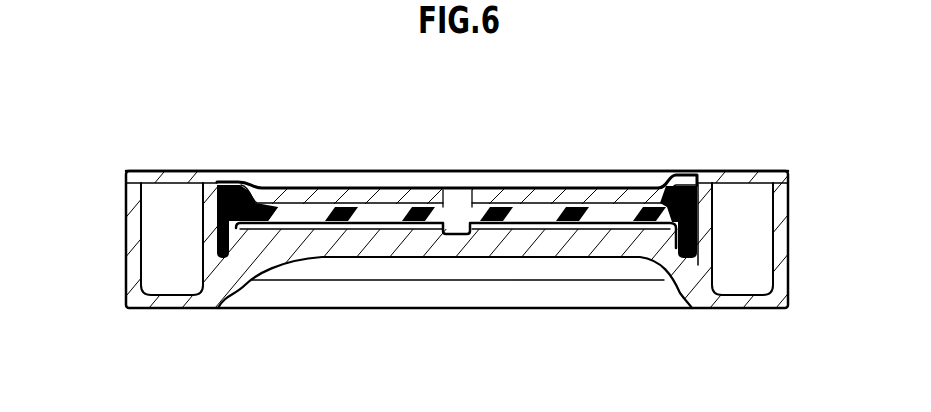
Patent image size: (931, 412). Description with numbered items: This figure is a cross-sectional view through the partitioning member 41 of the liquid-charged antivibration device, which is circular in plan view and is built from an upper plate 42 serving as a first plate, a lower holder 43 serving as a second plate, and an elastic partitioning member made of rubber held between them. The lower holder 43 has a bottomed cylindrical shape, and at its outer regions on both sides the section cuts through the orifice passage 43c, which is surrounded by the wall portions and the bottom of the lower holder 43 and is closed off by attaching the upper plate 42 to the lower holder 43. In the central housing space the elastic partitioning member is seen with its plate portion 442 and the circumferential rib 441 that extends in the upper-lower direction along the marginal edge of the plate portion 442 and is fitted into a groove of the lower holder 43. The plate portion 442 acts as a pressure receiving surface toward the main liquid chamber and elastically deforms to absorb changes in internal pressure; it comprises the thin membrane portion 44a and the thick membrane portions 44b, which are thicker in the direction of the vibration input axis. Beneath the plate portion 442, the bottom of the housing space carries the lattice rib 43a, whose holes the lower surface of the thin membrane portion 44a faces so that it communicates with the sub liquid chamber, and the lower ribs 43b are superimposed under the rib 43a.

The partitioning member 41 is at (160, 120).
The upper plate 42 is at (710, 170).
The lower holder 43 is at (790, 285).
The rib 43a is at (365, 245).
The lower ribs 43b is at (523, 282).
The orifice passage 43c is at (143, 242).
The thin membrane portion 44a is at (432, 224).
The thick membrane portions 44b is at (587, 228).
The circumferential rib 441 is at (228, 210).
The plate portion 442 is at (290, 214).